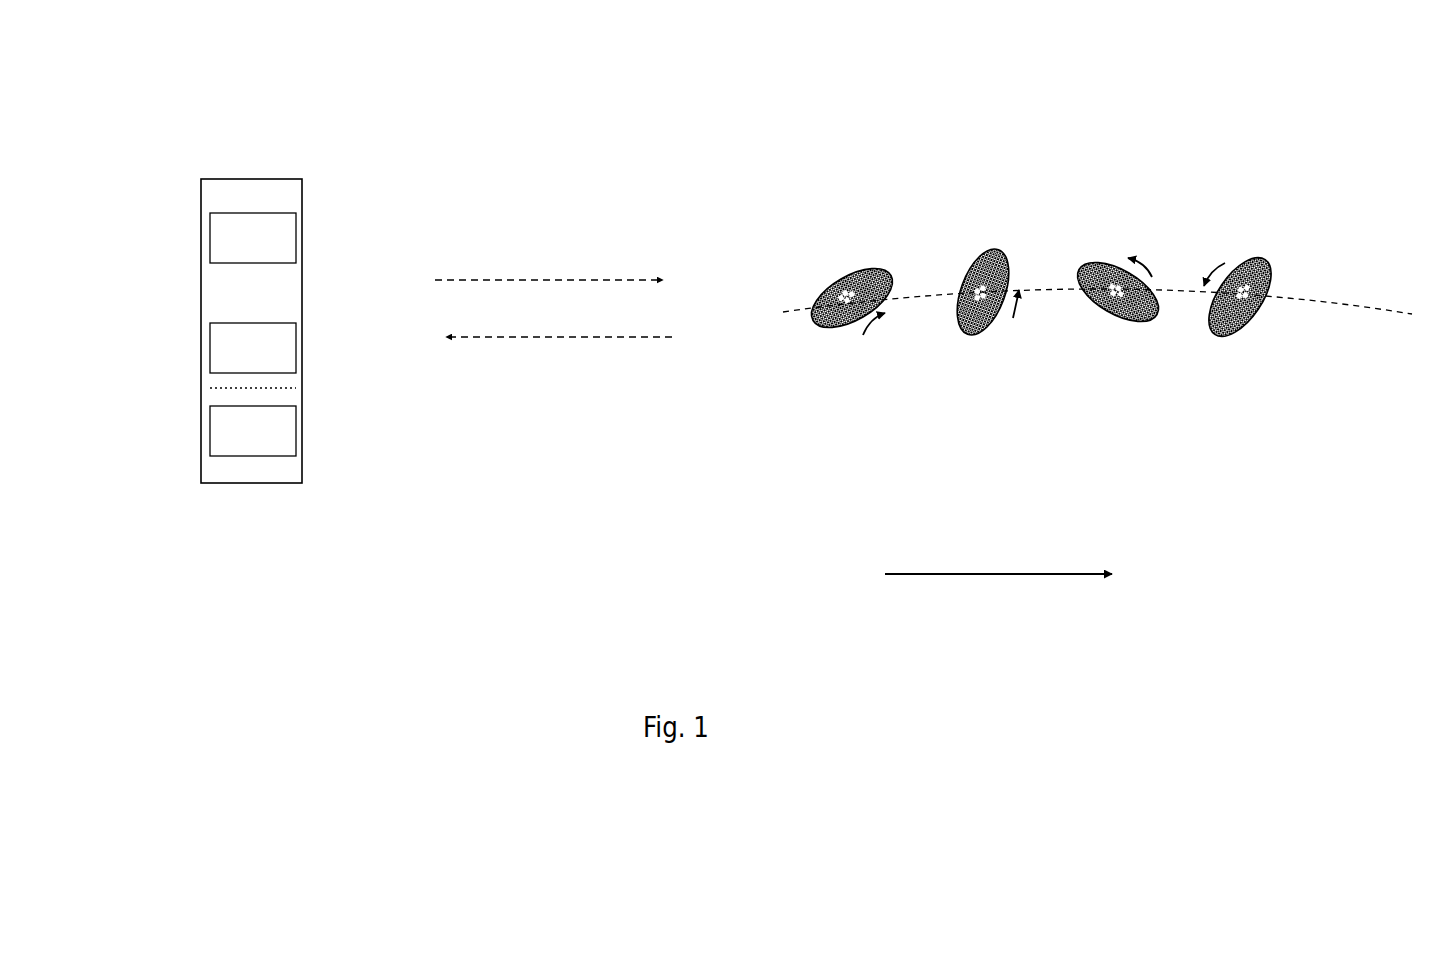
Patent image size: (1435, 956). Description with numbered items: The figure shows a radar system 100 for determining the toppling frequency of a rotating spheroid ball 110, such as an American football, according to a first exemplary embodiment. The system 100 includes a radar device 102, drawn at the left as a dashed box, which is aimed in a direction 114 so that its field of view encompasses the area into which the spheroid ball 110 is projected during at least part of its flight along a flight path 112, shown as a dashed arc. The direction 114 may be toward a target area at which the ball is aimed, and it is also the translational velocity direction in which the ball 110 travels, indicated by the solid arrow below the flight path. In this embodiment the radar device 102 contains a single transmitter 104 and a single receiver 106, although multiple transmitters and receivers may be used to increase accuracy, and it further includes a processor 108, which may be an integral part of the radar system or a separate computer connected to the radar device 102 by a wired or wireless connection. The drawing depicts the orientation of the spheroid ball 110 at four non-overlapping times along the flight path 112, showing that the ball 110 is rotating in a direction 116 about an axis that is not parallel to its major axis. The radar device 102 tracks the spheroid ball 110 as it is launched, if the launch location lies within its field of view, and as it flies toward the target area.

The radar system 100 is at (506, 142).
The radar device 102 is at (226, 179).
The transmitter 104 is at (253, 238).
The receiver 106 is at (253, 348).
The processor 108 is at (253, 431).
The spheroid ball 110 is at (996, 279).
The flight path 112 is at (1323, 301).
The direction 114 is at (1017, 574).
The rotation direction 116 is at (887, 326).